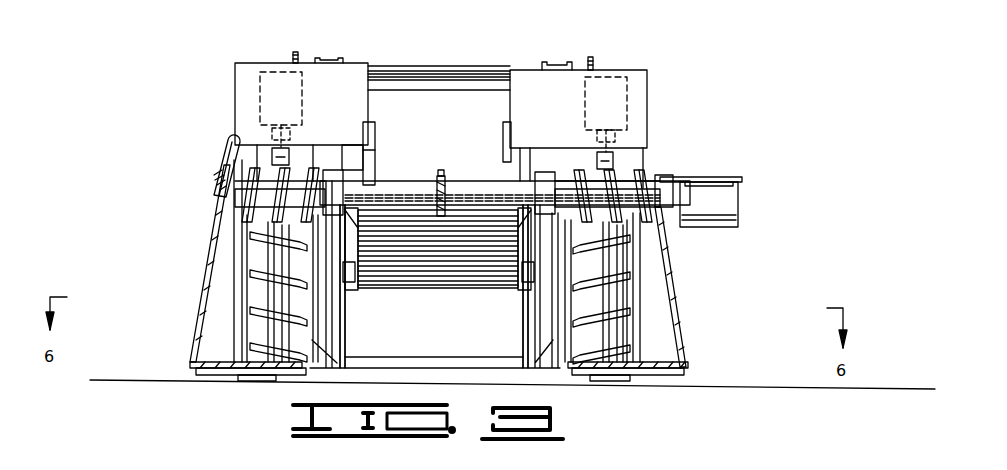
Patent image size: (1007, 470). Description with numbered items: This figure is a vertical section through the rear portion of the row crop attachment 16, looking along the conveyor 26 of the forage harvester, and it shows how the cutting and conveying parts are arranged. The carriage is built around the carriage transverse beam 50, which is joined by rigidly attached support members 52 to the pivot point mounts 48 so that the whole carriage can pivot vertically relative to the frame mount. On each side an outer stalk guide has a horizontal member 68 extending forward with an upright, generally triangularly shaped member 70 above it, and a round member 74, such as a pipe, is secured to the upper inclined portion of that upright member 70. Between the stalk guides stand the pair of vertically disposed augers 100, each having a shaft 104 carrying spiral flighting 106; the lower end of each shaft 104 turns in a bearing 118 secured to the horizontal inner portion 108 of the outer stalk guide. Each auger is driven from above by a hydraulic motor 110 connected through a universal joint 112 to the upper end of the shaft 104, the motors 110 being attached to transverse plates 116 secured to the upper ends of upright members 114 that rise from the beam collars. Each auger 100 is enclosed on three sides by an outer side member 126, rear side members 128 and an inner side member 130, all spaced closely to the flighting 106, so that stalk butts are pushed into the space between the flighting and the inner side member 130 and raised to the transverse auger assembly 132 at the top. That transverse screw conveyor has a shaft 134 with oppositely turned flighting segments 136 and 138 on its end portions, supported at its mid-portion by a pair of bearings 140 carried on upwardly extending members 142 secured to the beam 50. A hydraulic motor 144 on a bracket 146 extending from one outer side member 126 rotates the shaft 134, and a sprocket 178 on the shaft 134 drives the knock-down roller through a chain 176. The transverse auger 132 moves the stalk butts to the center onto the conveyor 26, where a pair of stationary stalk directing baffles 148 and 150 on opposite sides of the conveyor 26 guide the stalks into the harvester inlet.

The row crop attachment 16 is at (688, 40).
The conveyor 26 is at (445, 292).
The pivot point mounts 48 is at (358, 290).
The carriage transverse beam 50 is at (380, 360).
The support members 52 is at (343, 333).
The horizontal member 68 is at (205, 367).
The upright triangularly shaped member 70 is at (203, 300).
The round member 74 is at (222, 147).
The vertically disposed augers 100 is at (250, 255).
The auger shaft 104 is at (275, 330).
The spiral flighting 106 is at (253, 307).
The horizontal inner portion 108 is at (257, 365).
The hydraulic motors 110 is at (272, 74).
The universal joints 112 is at (278, 152).
The upright members 114 is at (233, 331).
The transverse plates 116 is at (237, 72).
The bearing 118 is at (275, 372).
The outer side member 126 is at (250, 280).
The rear side members 128 is at (245, 258).
The inner side member 130 is at (342, 307).
The transverse auger assembly 132 is at (245, 200).
The shaft 134 is at (397, 182).
The flighting segment 136 is at (265, 178).
The flighting segment 138 is at (617, 183).
The bearings 140 is at (337, 188).
The upwardly extending members 142 is at (327, 230).
The hydraulic motor 144 is at (713, 190).
The bracket 146 is at (677, 173).
The stalk directing baffle 148 is at (368, 125).
The stalk directing baffle 150 is at (510, 157).
The chain 176 is at (441, 176).
The sprocket 178 is at (443, 192).